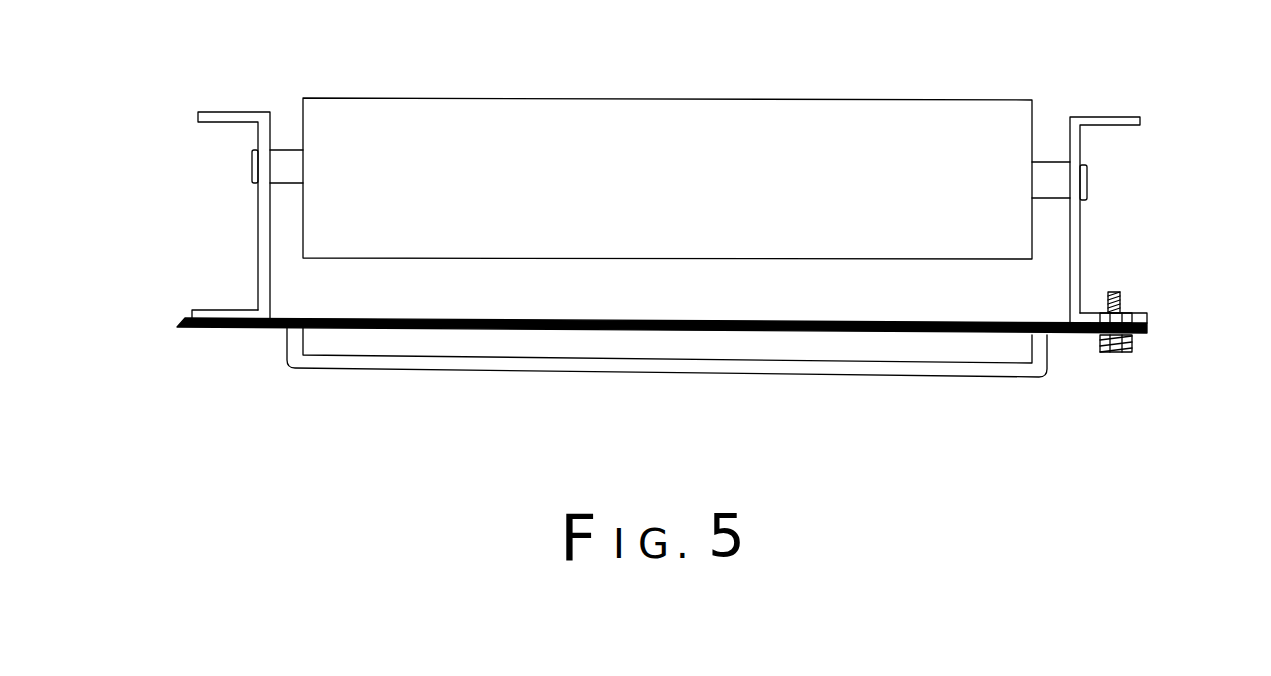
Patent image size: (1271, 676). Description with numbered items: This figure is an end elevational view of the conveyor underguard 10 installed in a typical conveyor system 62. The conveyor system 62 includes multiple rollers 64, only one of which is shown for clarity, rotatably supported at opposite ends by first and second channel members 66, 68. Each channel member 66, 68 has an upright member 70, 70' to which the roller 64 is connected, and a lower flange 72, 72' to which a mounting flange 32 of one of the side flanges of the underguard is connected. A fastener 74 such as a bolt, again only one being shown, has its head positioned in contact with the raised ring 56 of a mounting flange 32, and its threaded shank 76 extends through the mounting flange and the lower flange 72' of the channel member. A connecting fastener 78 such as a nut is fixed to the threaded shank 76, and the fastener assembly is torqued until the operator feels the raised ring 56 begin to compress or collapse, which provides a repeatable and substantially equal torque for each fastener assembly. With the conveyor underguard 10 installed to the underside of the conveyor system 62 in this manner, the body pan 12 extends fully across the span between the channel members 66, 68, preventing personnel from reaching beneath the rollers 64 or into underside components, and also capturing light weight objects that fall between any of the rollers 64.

The conveyor underguard 10 is at (920, 383).
The body pan 12 is at (738, 364).
The mounting flange 32 is at (187, 321).
The raised ring 56 is at (203, 336).
The conveyor system 62 is at (122, 118).
The roller 64 is at (338, 108).
The first channel member 66 is at (153, 264).
The second channel member 68 is at (1172, 243).
The upright member 70 is at (236, 215).
The upright member 70' is at (1135, 221).
The lower flange 72 is at (225, 288).
The lower flange 72' is at (1159, 310).
The fastener 74 is at (1098, 353).
The threaded shank 76 is at (1112, 290).
The connecting fastener 78 is at (1132, 317).